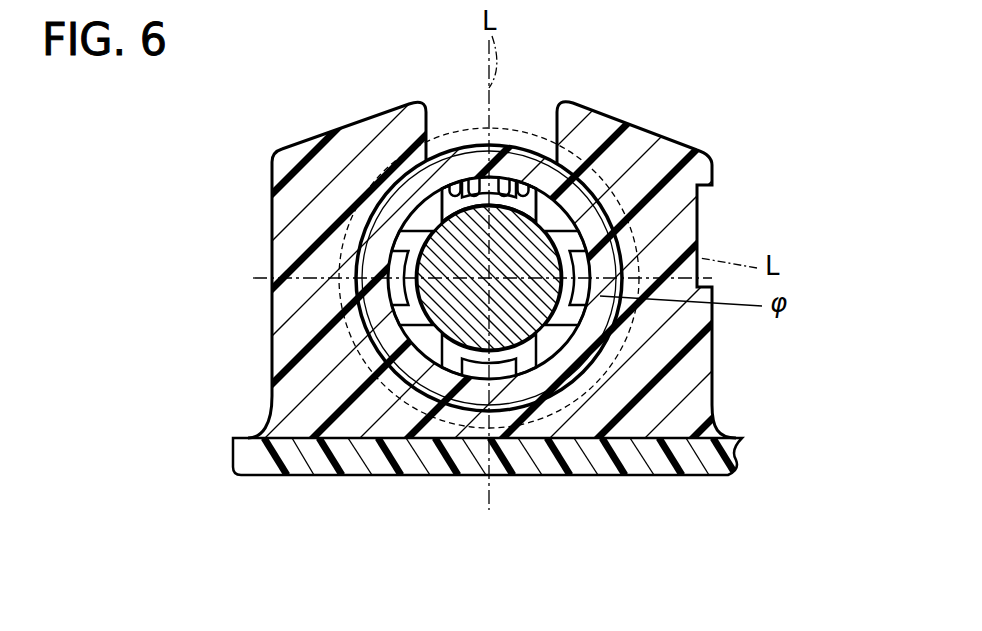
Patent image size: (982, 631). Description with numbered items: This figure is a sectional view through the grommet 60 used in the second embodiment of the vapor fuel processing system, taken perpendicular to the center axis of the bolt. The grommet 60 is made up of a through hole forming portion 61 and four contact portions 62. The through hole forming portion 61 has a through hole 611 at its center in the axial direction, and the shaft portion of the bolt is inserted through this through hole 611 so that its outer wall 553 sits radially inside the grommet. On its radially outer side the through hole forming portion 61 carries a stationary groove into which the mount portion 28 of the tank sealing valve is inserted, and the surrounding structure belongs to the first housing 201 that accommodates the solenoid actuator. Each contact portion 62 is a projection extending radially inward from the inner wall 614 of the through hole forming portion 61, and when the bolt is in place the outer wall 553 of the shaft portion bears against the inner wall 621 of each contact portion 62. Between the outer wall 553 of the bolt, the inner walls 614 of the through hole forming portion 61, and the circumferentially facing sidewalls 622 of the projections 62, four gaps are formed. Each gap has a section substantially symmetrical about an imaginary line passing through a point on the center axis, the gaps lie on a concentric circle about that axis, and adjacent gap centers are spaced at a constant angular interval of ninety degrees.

The grommet 60 is at (711, 367).
The first housing 201 is at (735, 450).
The contact portion 62 is at (405, 165).
The through hole 611 is at (466, 200).
The inner wall 621 is at (405, 255).
The sidewall 622 is at (448, 178).
The inner wall 614 is at (507, 190).
The mount portion 28 is at (689, 323).
The through hole forming portion 61 is at (619, 352).
The outer wall 553 is at (388, 375).